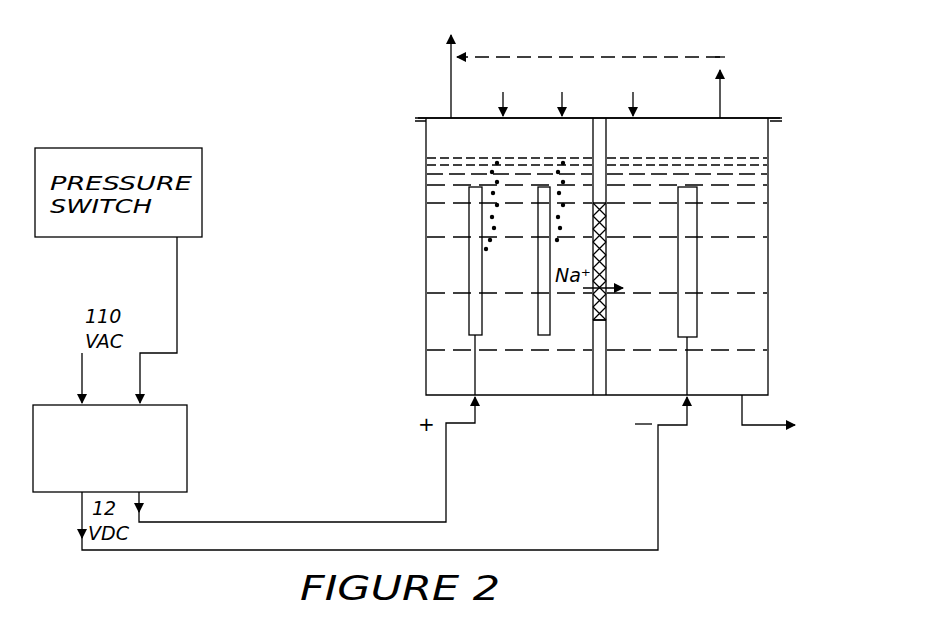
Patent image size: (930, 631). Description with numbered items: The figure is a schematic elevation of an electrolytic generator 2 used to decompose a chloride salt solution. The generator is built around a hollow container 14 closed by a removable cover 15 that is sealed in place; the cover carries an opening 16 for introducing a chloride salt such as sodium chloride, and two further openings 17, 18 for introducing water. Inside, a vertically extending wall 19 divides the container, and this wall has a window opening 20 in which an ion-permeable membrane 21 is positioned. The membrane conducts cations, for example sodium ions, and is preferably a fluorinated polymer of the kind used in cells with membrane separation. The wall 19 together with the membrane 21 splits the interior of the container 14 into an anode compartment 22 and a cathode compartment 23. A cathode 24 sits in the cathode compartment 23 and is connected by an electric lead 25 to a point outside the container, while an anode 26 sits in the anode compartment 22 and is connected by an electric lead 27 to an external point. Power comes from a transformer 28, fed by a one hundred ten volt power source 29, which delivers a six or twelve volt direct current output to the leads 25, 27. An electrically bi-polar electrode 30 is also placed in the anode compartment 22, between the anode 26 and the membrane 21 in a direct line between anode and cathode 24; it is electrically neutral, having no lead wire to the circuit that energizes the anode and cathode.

The electrolytic generator 2 is at (401, 276).
The hollow container 14 is at (426, 185).
The removable cover 15 is at (426, 117).
The opening 16 is at (503, 117).
The opening 17 is at (566, 117).
The opening 18 is at (640, 117).
The vertically extending wall 19 is at (611, 348).
The window opening 20 is at (592, 321).
The ion-permeable membrane 21 is at (606, 258).
The anode compartment 22 is at (443, 372).
The cathode compartment 23 is at (743, 250).
The cathode 24 is at (687, 317).
The electric lead 25 is at (690, 370).
The anode 26 is at (469, 318).
The electric lead 27 is at (477, 382).
The transformer 28 is at (187, 458).
The 110 volt power source 29 is at (145, 357).
The bi-polar electrode 30 is at (540, 287).